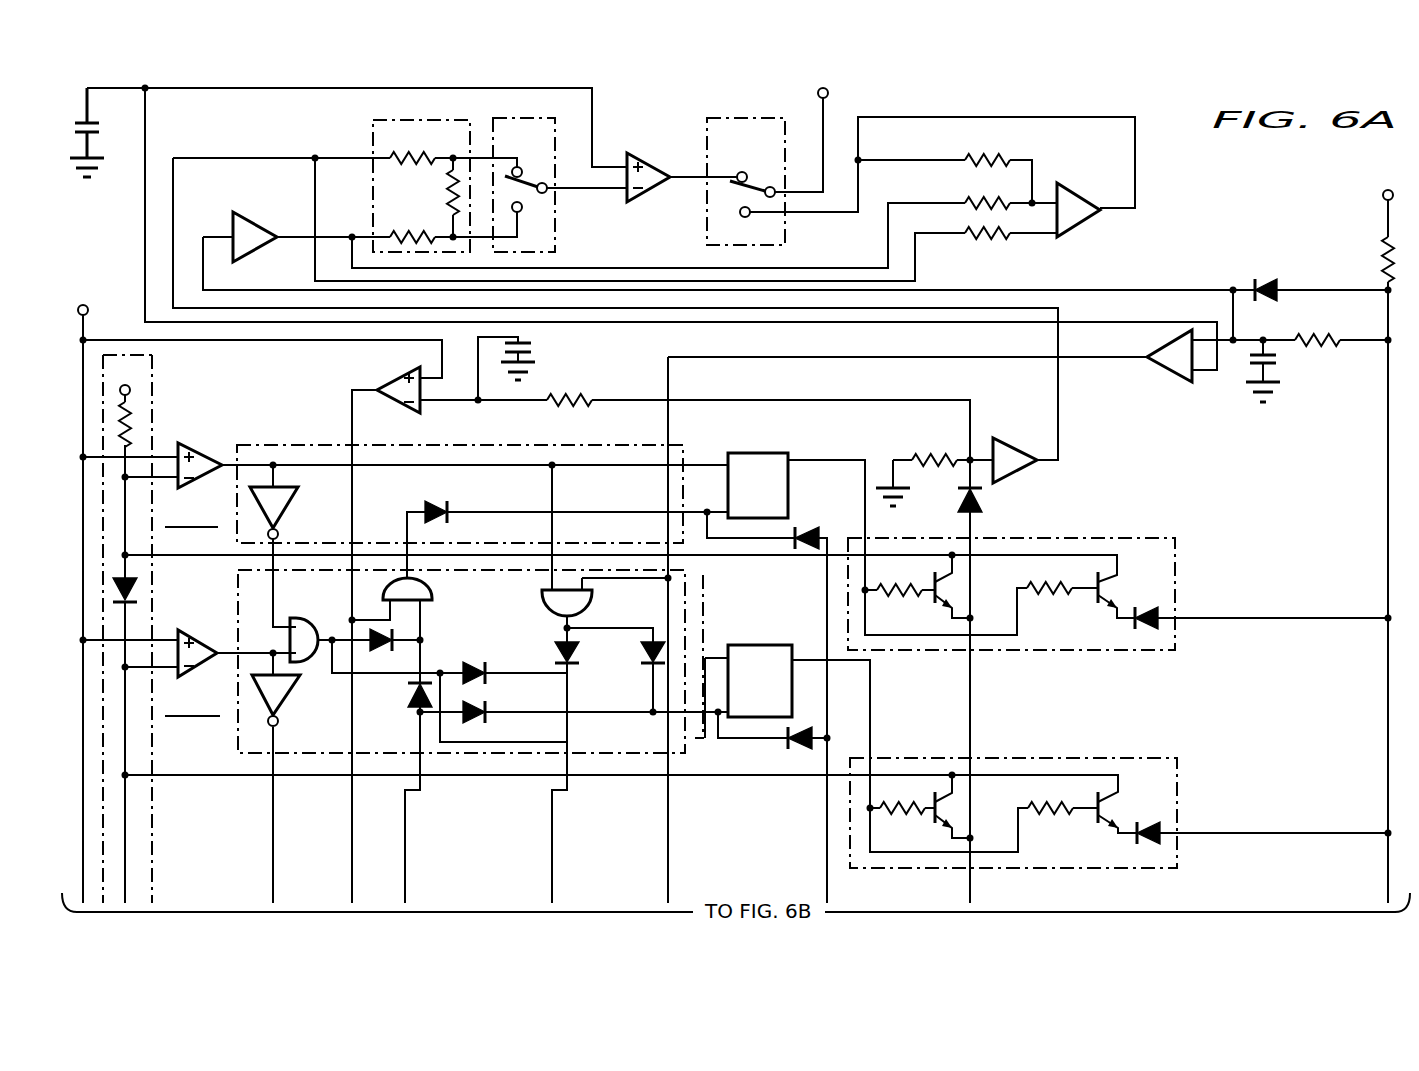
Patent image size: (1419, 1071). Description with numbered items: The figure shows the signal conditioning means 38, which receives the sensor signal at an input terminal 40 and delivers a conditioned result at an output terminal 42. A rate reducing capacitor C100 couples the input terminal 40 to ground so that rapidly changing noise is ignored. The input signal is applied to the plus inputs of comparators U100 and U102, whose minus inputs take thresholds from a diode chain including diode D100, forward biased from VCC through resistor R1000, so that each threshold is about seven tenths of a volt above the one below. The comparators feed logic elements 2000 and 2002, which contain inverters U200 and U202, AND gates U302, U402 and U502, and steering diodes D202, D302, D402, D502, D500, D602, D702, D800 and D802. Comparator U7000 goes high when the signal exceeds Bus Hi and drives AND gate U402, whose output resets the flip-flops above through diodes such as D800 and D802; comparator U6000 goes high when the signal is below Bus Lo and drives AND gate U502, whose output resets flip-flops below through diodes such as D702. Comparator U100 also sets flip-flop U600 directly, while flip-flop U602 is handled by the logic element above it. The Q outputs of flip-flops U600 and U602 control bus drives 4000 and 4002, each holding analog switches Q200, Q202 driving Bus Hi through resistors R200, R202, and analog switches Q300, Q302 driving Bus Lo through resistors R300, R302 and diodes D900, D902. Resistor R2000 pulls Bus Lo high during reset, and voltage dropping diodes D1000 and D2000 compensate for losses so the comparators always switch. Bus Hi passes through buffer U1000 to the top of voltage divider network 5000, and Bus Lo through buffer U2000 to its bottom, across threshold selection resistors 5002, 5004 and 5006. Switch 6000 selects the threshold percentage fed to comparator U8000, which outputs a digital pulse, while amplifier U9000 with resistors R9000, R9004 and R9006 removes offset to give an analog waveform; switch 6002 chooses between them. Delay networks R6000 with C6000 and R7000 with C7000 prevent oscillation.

The rate reducing capacitor C100 is at (111, 132).
The voltage divider network 5000 is at (376, 124).
The threshold selection resistor 5002 is at (414, 144).
The threshold selection resistor 5004 is at (419, 192).
The threshold selection resistor 5006 is at (409, 220).
The buffer U2000 is at (253, 199).
The switch 6000 is at (541, 112).
The comparator U8000 is at (644, 162).
The switch 6002 is at (753, 109).
The output terminal 42 is at (829, 94).
The resistor R9004 is at (982, 146).
The resistor R9000 is at (982, 190).
The resistor R9006 is at (982, 249).
The amplifier U9000 is at (1094, 227).
The signal conditioning means 38 is at (1200, 205).
The resistor R2000 is at (1357, 224).
The voltage dropping diode D2000 is at (1266, 274).
The resistor R6000 is at (1312, 326).
The capacitor C6000 is at (1300, 377).
The comparator U6000 is at (1143, 352).
The input terminal 40 is at (88, 308).
The comparator U7000 is at (375, 377).
The capacitor C7000 is at (555, 357).
The resistor R7000 is at (582, 385).
The resistor R1000 is at (133, 413).
The comparator U100 is at (191, 471).
The logic element 2000 is at (312, 443).
The inverter U200 is at (300, 513).
The steering diode D500 is at (451, 498).
The flip-flop U600 is at (758, 472).
The steering diode D800 is at (826, 527).
The buffer U1000 is at (1015, 446).
The voltage dropping diode D1000 is at (1009, 508).
The bus drive 4000 is at (1074, 540).
The analog switch Q200 is at (901, 577).
The resistor R200 is at (907, 606).
The analog switch Q300 is at (1064, 577).
The resistor R300 is at (1052, 605).
The diode D900 is at (1114, 630).
The logic element 2002 is at (237, 583).
The diode D100 is at (139, 605).
The comparator U102 is at (191, 661).
The AND gate U302 is at (305, 625).
The inverter U202 is at (298, 706).
The AND gate U402 is at (438, 584).
The steering diode D202 is at (386, 652).
The steering diode D302 is at (396, 710).
The steering diode D402 is at (507, 682).
The steering diode D502 is at (507, 719).
The AND gate U502 is at (535, 604).
The steering diode D602 is at (533, 647).
The steering diode D702 is at (627, 667).
The flip-flop U602 is at (757, 668).
The steering diode D802 is at (768, 748).
The bus drive 4002 is at (1058, 758).
The analog switch Q202 is at (904, 797).
The resistor R202 is at (903, 824).
The analog switch Q302 is at (1065, 797).
The resistor R302 is at (1055, 824).
The diode D902 is at (1117, 845).